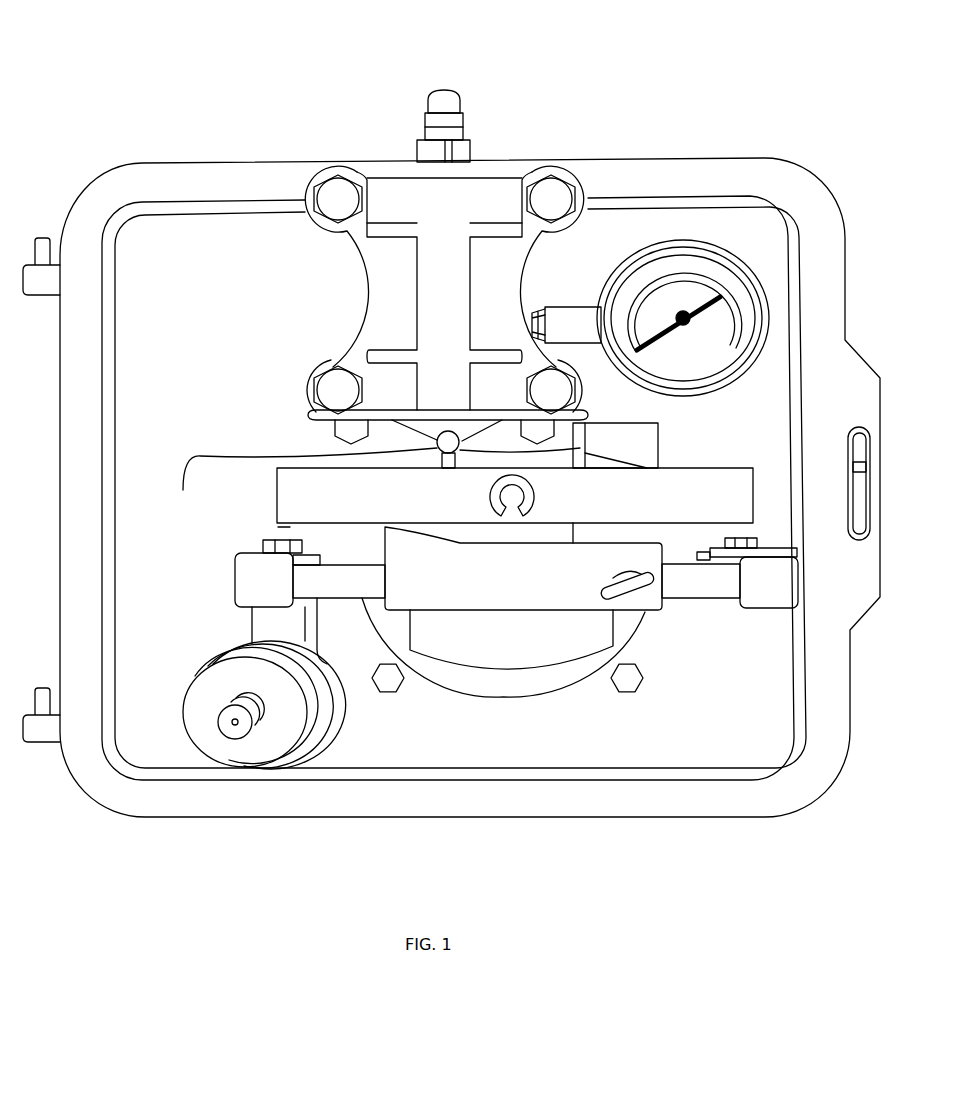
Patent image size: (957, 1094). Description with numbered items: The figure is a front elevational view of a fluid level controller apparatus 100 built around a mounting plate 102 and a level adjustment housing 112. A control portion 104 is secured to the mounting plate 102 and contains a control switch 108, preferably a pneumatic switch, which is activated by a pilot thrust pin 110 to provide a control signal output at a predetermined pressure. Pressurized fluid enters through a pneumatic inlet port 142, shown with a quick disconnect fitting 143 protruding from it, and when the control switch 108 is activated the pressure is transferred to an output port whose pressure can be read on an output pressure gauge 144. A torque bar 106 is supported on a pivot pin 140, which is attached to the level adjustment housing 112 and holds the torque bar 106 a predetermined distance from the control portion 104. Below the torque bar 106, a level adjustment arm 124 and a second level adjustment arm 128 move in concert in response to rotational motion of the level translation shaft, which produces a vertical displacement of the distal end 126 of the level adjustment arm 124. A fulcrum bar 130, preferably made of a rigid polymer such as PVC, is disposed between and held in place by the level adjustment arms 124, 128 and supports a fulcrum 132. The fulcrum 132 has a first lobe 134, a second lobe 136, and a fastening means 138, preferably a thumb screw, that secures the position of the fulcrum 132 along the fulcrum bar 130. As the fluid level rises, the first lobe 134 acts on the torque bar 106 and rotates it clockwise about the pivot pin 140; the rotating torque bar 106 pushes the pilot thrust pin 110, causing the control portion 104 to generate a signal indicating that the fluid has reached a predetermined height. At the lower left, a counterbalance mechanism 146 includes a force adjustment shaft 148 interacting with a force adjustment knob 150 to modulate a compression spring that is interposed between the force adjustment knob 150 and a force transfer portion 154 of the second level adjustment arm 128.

The fluid level controller apparatus 100 is at (312, 56).
The mounting plate 102 is at (632, 172).
The control portion 104 is at (497, 165).
The torque bar 106 is at (680, 478).
The control switch 108 is at (380, 439).
The pilot thrust pin 110 is at (371, 478).
The level adjustment housing 112 is at (460, 655).
The level adjustment arm 124 is at (770, 548).
The distal end 126 is at (765, 593).
The second level adjustment arm 128 is at (240, 558).
The fulcrum bar 130 is at (357, 578).
The fulcrum 132 is at (612, 423).
The first lobe 134 is at (655, 450).
The second lobe 136 is at (278, 527).
The fastening means 138 is at (608, 582).
The pivot pin 140 is at (500, 497).
The pneumatic inlet port 142 is at (444, 78).
The quick disconnect fitting 143 is at (435, 128).
The output pressure gauge 144 is at (682, 230).
The counterbalance mechanism 146 is at (186, 652).
The force adjustment shaft 148 is at (222, 722).
The force adjustment knob 150 is at (215, 697).
The force transfer portion 154 is at (340, 700).